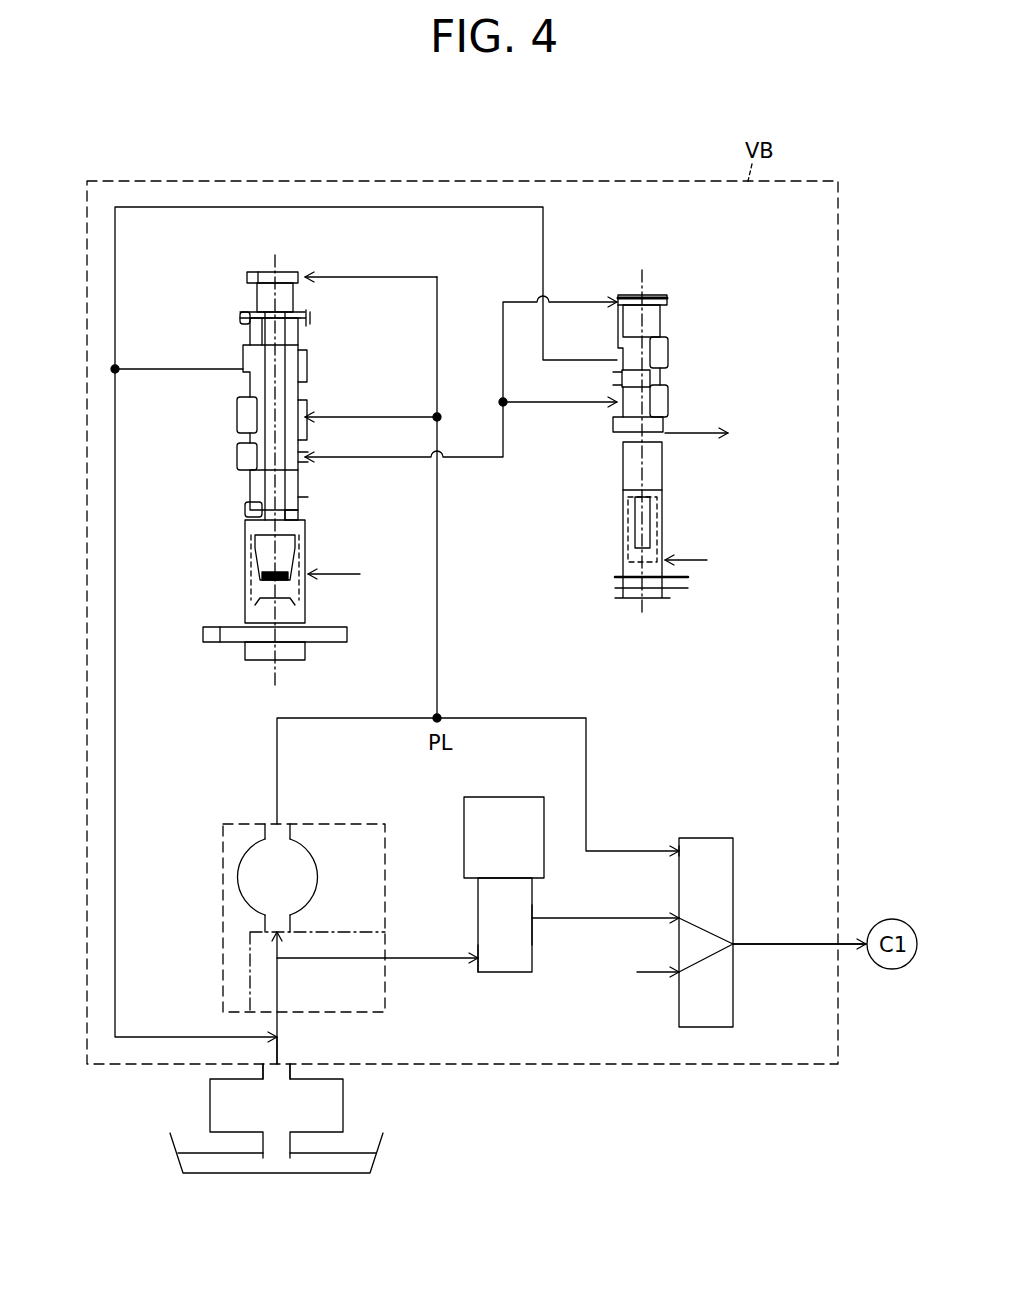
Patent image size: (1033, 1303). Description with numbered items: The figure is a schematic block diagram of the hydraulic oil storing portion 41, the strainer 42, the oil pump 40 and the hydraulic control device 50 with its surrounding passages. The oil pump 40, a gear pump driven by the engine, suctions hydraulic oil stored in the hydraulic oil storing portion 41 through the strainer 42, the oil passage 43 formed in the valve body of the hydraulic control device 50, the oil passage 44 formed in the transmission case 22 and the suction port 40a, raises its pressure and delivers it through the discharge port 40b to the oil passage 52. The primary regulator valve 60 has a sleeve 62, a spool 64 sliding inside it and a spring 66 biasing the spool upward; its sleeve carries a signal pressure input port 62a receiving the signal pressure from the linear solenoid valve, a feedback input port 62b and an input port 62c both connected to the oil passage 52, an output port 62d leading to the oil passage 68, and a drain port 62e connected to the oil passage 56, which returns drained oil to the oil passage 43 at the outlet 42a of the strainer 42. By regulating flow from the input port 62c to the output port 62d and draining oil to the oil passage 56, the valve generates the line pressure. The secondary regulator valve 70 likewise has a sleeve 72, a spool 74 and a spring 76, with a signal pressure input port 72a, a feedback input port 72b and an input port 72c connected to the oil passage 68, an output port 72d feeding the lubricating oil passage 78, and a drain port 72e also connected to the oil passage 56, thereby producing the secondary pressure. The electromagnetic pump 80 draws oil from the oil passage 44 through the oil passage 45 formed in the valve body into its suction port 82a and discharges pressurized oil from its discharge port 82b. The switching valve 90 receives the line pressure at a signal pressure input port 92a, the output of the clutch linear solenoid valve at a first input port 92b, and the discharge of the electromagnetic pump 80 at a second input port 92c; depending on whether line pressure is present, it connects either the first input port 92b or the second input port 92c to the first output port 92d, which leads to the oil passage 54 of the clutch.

The hydraulic control device 50 is at (696, 126).
The primary regulator valve 60 is at (208, 282).
The sleeve 62 is at (292, 272).
The signal pressure input port 62a is at (312, 570).
The feedback input port 62b is at (302, 278).
The input port 62c is at (308, 412).
The output port 62d is at (308, 458).
The drain port 62e is at (243, 367).
The spool 64 is at (247, 320).
The spring 66 is at (245, 548).
The oil passage 68 is at (470, 460).
The secondary regulator valve 70 is at (718, 305).
The sleeve 72 is at (651, 294).
The signal pressure input port 72a is at (666, 557).
The feedback input port 72b is at (617, 300).
The input port 72c is at (617, 400).
The output port 72d is at (667, 423).
The drain port 72e is at (617, 360).
The spool 74 is at (655, 380).
The spring 76 is at (623, 508).
The lubricating oil passage 78 is at (717, 427).
The electromagnetic pump 80 is at (505, 797).
The suction port 82a is at (478, 963).
The discharge port 82b is at (533, 930).
The switching valve 90 is at (705, 838).
The signal pressure input port 92a is at (678, 851).
The first input port 92b is at (678, 970).
The second input port 92c is at (678, 918).
The first output port 92d is at (745, 944).
The oil passage 54 is at (790, 947).
The oil passage 52 is at (368, 716).
The oil passage 56 is at (118, 704).
The oil pump 40 is at (247, 882).
The suction port 40a is at (270, 926).
The discharge port 40b is at (265, 830).
The transmission case 22 is at (347, 930).
The oil passage 44 is at (280, 994).
The oil passage 45 is at (398, 957).
The oil passage 43 is at (280, 1049).
The strainer 42 is at (343, 1109).
The outlet 42a is at (278, 1069).
The hydraulic oil storing portion 41 is at (383, 1140).